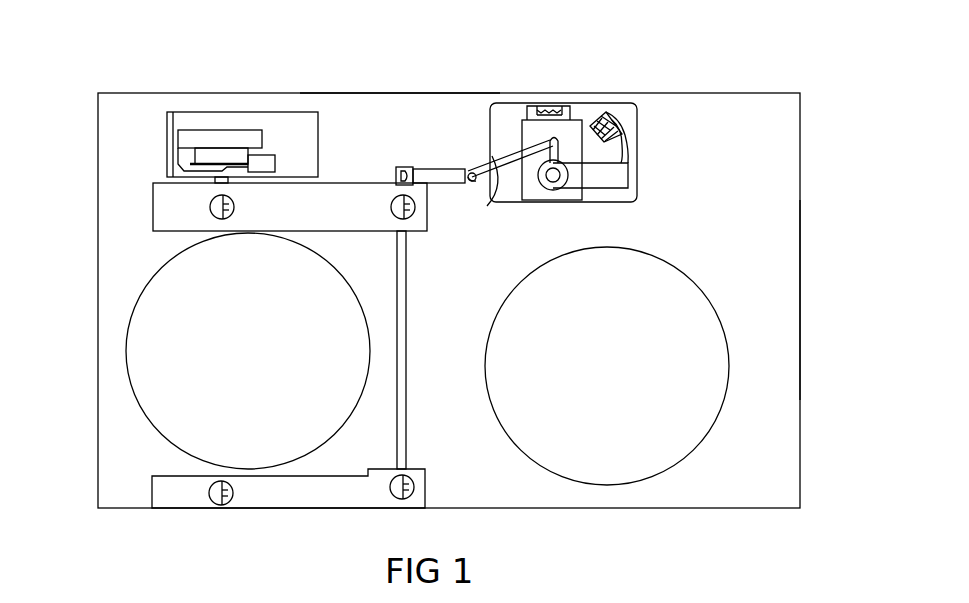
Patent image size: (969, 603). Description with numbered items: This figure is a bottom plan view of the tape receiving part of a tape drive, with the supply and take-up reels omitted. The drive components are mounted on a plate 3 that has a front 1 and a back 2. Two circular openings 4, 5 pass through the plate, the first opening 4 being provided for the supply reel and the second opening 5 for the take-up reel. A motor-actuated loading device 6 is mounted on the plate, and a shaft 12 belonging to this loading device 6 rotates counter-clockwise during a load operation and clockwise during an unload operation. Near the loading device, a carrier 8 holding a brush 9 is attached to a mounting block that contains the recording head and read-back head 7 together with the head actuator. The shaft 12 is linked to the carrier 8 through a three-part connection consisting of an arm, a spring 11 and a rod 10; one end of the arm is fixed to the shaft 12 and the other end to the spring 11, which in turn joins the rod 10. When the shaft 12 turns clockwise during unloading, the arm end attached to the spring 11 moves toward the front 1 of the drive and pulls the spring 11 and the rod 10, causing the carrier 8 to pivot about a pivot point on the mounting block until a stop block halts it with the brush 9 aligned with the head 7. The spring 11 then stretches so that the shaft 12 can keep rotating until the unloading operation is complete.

The front 1 is at (98, 290).
The back 2 is at (800, 293).
The plate 3 is at (402, 93).
The circular opening 4 is at (248, 351).
The circular opening 5 is at (607, 366).
The loading device 6 is at (337, 195).
The recording head and read-back head 7 is at (552, 107).
The carrier 8 is at (622, 182).
The brush 9 is at (612, 120).
The rod 10 is at (487, 206).
The spring 11 is at (440, 168).
The shaft 12 is at (407, 347).